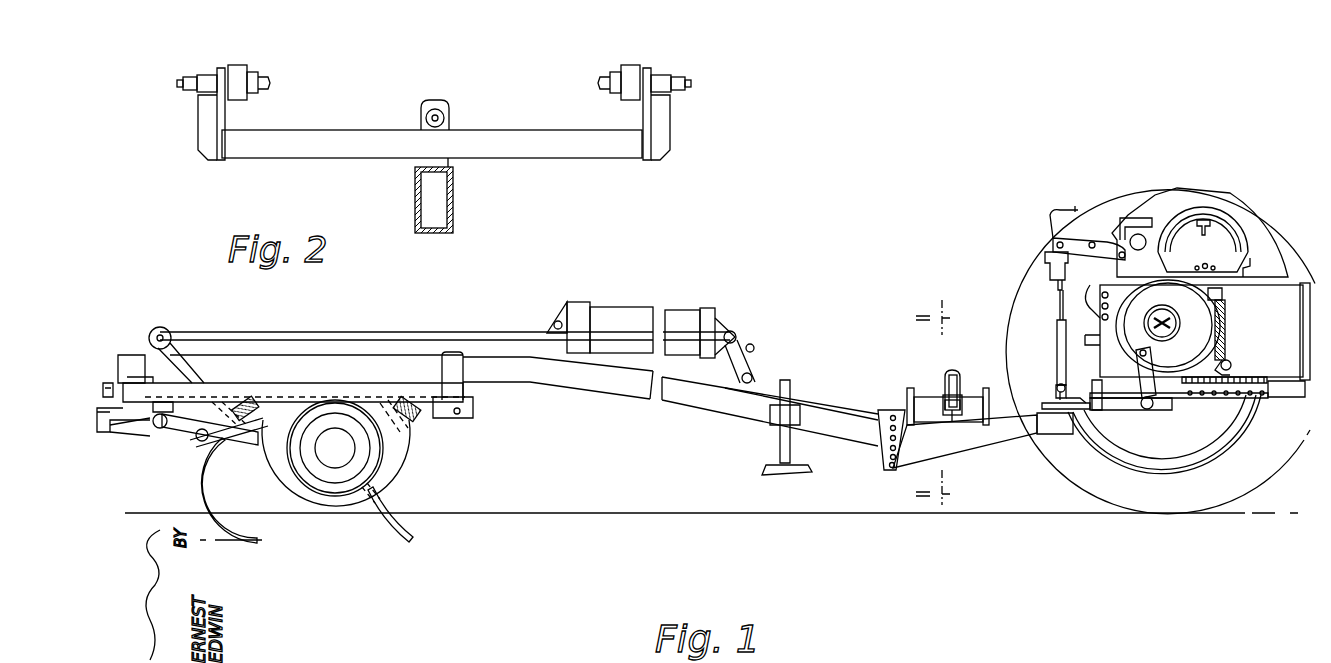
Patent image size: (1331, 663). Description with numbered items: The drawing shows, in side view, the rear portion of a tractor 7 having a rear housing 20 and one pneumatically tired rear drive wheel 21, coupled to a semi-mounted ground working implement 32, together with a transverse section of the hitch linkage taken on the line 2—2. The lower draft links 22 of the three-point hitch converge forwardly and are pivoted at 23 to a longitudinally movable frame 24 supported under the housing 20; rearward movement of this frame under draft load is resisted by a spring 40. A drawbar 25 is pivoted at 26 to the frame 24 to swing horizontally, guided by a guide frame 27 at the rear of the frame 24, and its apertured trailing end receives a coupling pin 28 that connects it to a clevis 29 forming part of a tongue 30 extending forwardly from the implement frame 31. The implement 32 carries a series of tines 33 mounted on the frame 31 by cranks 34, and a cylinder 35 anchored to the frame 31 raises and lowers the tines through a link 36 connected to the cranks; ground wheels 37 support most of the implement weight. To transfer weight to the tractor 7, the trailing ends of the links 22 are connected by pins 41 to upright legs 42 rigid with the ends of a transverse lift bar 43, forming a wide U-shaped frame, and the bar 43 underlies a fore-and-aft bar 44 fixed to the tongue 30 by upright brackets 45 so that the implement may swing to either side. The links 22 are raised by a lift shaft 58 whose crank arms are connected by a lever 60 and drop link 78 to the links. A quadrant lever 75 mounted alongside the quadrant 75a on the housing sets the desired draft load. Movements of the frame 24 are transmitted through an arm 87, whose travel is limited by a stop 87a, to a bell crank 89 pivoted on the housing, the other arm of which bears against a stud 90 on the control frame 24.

In FIG. 1, the rear housing 20 is at (1295, 283).
In FIG. 1, the pneumatically tired wheel 21 is at (1258, 505).
In FIG. 2, the draft links 22 is at (238, 65).
In FIG. 1, the draft links 22 is at (960, 380).
In FIG. 1, the pivot 23 is at (1148, 408).
In FIG. 1, the longitudinally movable frame 24 is at (1216, 394).
In FIG. 1, the drawbar 25 is at (1132, 404).
In FIG. 1, the pivot 26 is at (1172, 410).
In FIG. 1, the guide frame 27 is at (1096, 412).
In FIG. 1, the coupling pin 28 is at (1060, 375).
In FIG. 1, the clevis 29 is at (1068, 410).
In FIG. 2, the tongue 30 is at (455, 206).
In FIG. 1, the tongue 30 is at (970, 437).
In FIG. 1, the implement frame 31 is at (810, 400).
In FIG. 1, the implement 32 is at (510, 333).
In FIG. 1, the tines 33 is at (256, 542).
In FIG. 1, the cranks 34 is at (200, 440).
In FIG. 1, the cylinder 35 is at (626, 318).
In FIG. 1, the link 36 is at (384, 333).
In FIG. 1, the ground wheels 37 is at (337, 505).
In FIG. 1, the spring 40 is at (1245, 398).
In FIG. 2, the pins 41 is at (262, 82).
In FIG. 1, the pins 41 is at (950, 370).
In FIG. 2, the upright legs 42 is at (198, 122).
In FIG. 1, the upright legs 42 is at (912, 388).
In FIG. 2, the lift bar 43 is at (372, 112).
In FIG. 1, the lift bar 43 is at (935, 422).
In FIG. 2, the fore-and-aft extending bar 44 is at (432, 100).
In FIG. 1, the fore-and-aft extending bar 44 is at (914, 390).
In FIG. 2, the upright brackets 45 is at (452, 164).
In FIG. 1, the upright brackets 45 is at (914, 410).
In FIG. 1, the lift shaft 58 is at (1140, 234).
In FIG. 1, the lever 60 is at (1075, 240).
In FIG. 1, the quadrant lever 75 is at (1203, 218).
In FIG. 1, the quadrant 75a is at (1258, 272).
In FIG. 1, the drop link 78 is at (1056, 370).
In FIG. 1, the arm 87 is at (1208, 292).
In FIG. 1, the stop 87a is at (1226, 318).
In FIG. 1, the bell crank 89 is at (1232, 366).
In FIG. 1, the stud 90 is at (1170, 375).
In FIG. 1, the assembly 7 is at (1108, 185).
In FIG. 1, the section line 2 is at (944, 400).